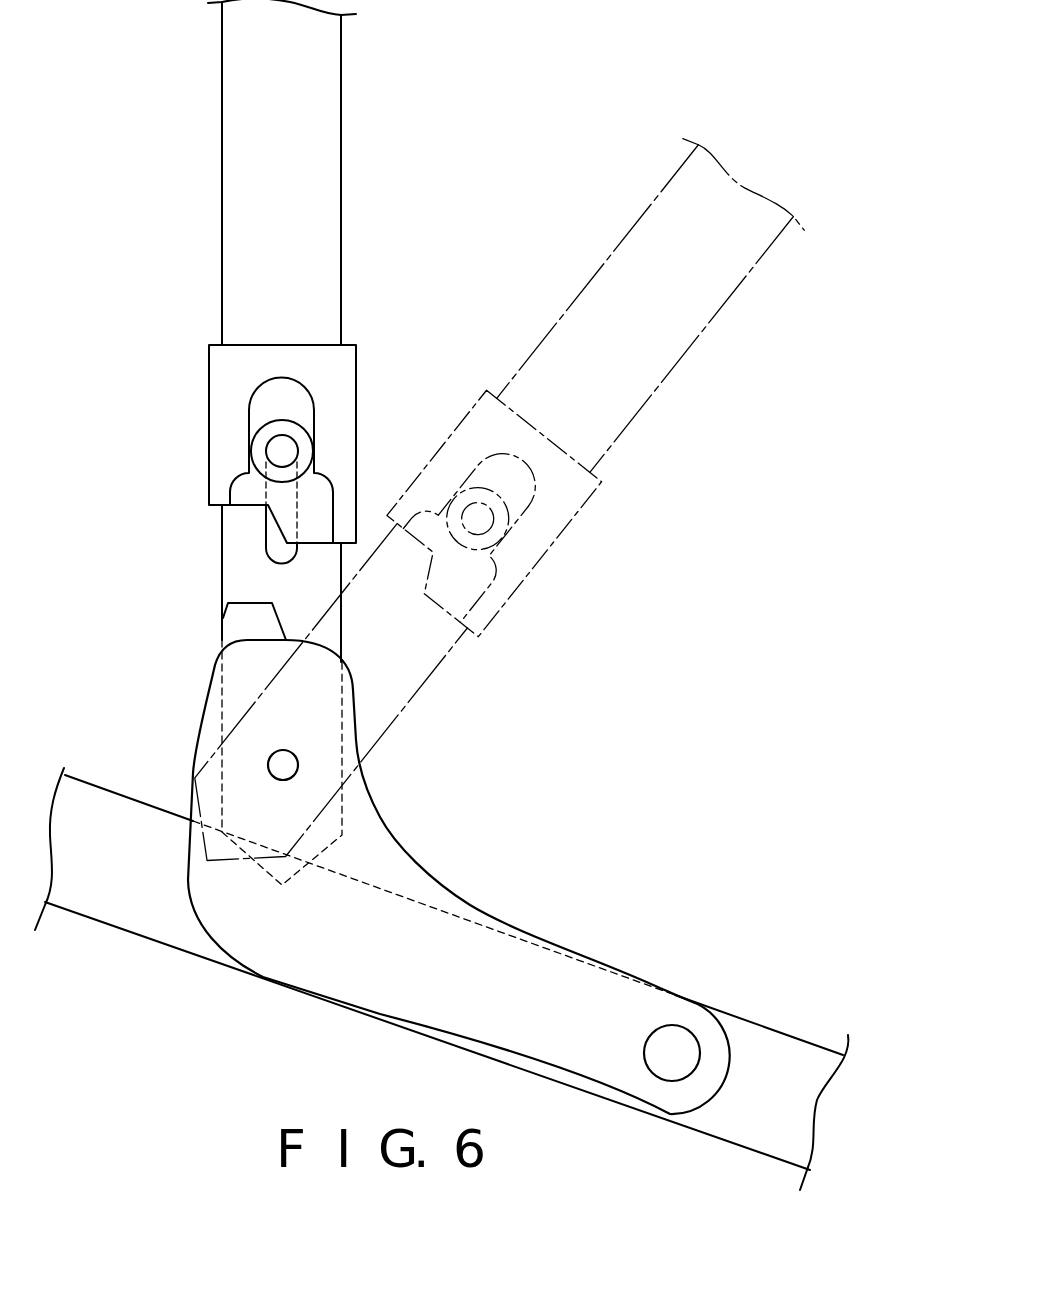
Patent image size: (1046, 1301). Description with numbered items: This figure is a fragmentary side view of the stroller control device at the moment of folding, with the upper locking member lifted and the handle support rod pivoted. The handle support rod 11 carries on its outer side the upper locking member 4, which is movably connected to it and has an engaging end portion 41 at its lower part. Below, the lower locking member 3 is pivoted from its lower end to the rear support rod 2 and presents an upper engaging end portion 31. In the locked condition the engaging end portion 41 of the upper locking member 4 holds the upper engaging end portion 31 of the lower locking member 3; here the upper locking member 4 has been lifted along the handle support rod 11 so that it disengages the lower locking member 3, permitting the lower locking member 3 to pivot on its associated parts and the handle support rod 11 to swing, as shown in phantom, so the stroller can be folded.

The handle support rod 11 is at (237, 208).
The upper locking member 4 is at (228, 388).
The engaging end portion 41 is at (313, 543).
The upper engaging end portion 31 is at (250, 620).
The lower locking member 3 is at (397, 873).
The rear support rod 2 is at (752, 1040).